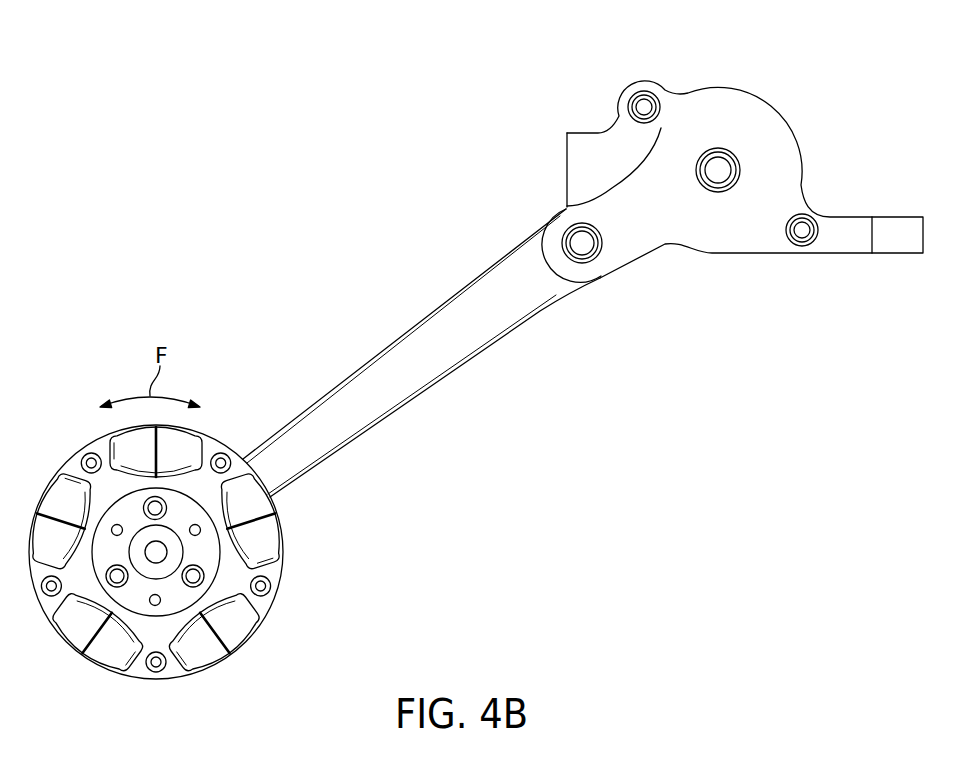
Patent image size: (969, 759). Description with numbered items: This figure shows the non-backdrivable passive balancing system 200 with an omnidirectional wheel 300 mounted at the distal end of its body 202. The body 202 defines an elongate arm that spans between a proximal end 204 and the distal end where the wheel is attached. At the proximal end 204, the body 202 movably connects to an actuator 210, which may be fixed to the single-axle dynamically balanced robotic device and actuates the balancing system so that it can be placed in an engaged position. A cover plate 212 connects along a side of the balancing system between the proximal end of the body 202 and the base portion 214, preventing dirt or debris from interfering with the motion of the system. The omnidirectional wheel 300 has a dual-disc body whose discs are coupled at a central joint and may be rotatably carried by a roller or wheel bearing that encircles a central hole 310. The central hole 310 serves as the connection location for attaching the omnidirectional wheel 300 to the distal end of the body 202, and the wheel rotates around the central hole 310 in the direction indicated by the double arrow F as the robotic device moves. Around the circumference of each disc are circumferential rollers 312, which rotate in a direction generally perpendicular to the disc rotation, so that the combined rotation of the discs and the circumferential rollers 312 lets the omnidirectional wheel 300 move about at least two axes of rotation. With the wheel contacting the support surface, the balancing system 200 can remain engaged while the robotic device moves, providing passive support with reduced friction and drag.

The non-backdrivable passive balancing system 200 is at (297, 190).
The body 202 is at (500, 316).
The proximal end 204 is at (628, 258).
The actuator 210 is at (745, 90).
The cover plate 212 is at (766, 155).
The base portion 214 is at (818, 255).
The omnidirectional wheel 300 is at (77, 365).
The central hole 310 is at (147, 560).
The circumferential rollers 312 is at (283, 547).